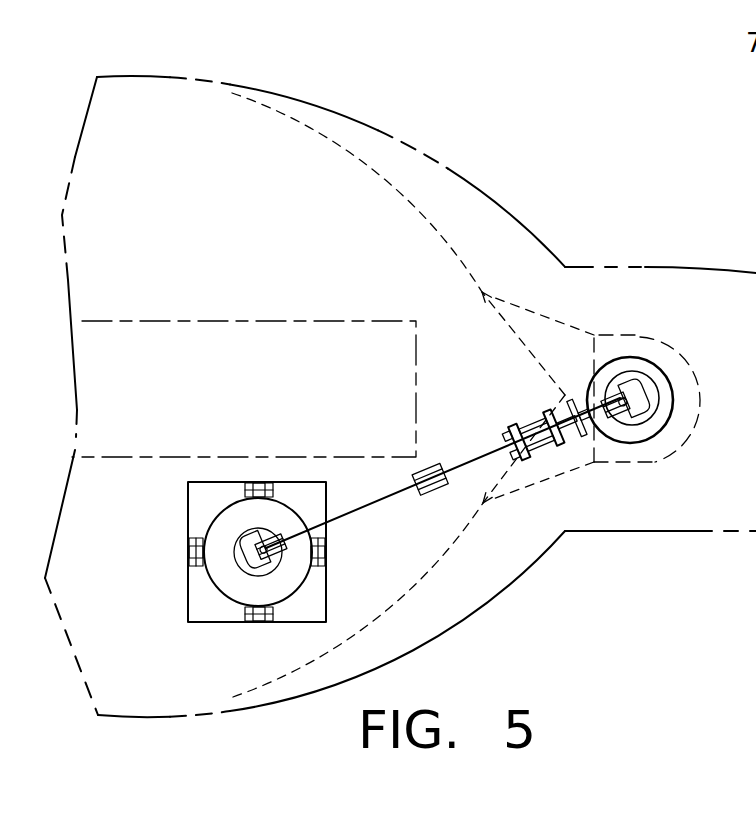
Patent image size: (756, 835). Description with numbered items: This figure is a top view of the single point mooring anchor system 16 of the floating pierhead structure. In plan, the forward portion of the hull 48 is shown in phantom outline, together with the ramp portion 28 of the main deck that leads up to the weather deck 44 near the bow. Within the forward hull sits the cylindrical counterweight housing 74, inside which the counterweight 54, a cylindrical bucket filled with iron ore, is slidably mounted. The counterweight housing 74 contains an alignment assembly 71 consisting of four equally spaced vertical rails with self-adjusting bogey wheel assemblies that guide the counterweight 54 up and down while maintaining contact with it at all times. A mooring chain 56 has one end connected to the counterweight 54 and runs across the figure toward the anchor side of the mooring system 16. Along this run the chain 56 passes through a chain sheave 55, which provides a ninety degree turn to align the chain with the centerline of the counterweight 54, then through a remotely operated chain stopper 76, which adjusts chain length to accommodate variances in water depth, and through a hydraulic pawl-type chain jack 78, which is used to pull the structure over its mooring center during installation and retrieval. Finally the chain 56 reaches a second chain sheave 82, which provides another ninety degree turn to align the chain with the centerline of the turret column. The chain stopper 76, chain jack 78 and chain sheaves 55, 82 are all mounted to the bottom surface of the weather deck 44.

The single point mooring anchor system 16 is at (653, 343).
The ramp portion 28 is at (237, 321).
The weather deck 44 is at (499, 237).
The hull 48 is at (317, 130).
The counterweight 54 is at (228, 590).
The chain sheave 55 is at (265, 530).
The mooring chain 56 is at (380, 500).
The alignment assembly 71 is at (187, 546).
The counterweight housing 74 is at (197, 493).
The chain stopper 76 is at (430, 477).
The chain jack 78 is at (553, 445).
The chain sheave 82 is at (621, 428).